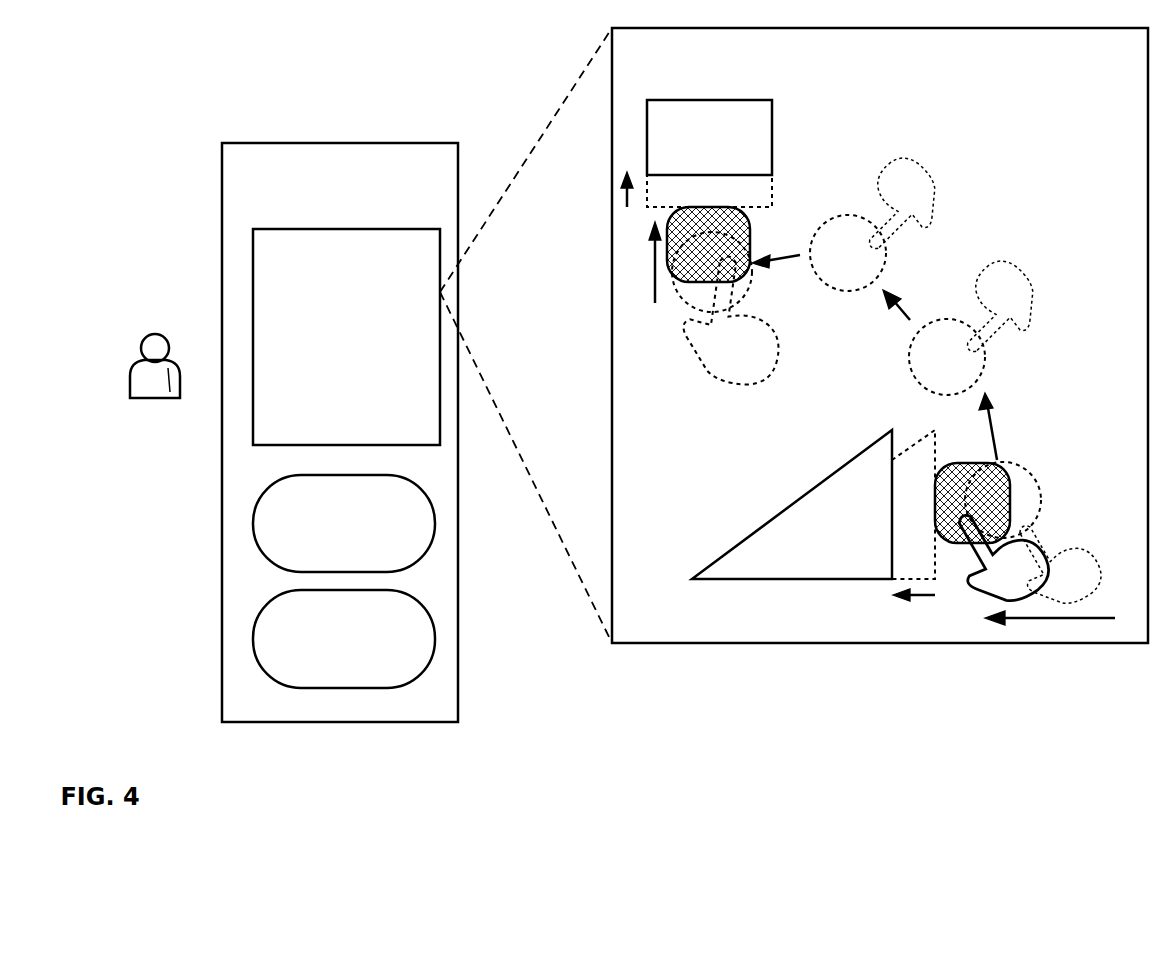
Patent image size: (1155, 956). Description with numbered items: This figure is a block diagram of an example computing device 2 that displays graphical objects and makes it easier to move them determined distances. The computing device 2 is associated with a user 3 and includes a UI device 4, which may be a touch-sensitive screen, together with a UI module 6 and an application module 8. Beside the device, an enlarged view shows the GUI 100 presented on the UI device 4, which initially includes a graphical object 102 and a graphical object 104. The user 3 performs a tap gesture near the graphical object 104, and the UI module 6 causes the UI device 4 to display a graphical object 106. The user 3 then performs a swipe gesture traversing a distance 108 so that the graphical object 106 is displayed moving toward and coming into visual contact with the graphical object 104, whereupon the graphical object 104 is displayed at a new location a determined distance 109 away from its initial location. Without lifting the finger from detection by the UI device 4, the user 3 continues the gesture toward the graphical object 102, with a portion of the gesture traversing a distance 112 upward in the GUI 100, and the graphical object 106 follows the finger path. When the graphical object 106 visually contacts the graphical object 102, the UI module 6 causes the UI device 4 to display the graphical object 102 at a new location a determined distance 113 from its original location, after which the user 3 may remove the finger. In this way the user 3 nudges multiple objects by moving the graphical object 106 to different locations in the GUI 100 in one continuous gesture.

The computing device 2 is at (340, 432).
The user 3 is at (155, 397).
The UI device 4 is at (346, 337).
The UI module 6 is at (344, 523).
The application module 8 is at (344, 639).
The GUI 100 is at (880, 335).
The graphical object 102 is at (772, 130).
The graphical object 104 is at (830, 476).
The graphical object 106 is at (750, 240).
The distance 108 is at (1033, 618).
The determined distance 109 is at (894, 595).
The distance 112 is at (641, 262).
The determined distance 113 is at (626, 178).